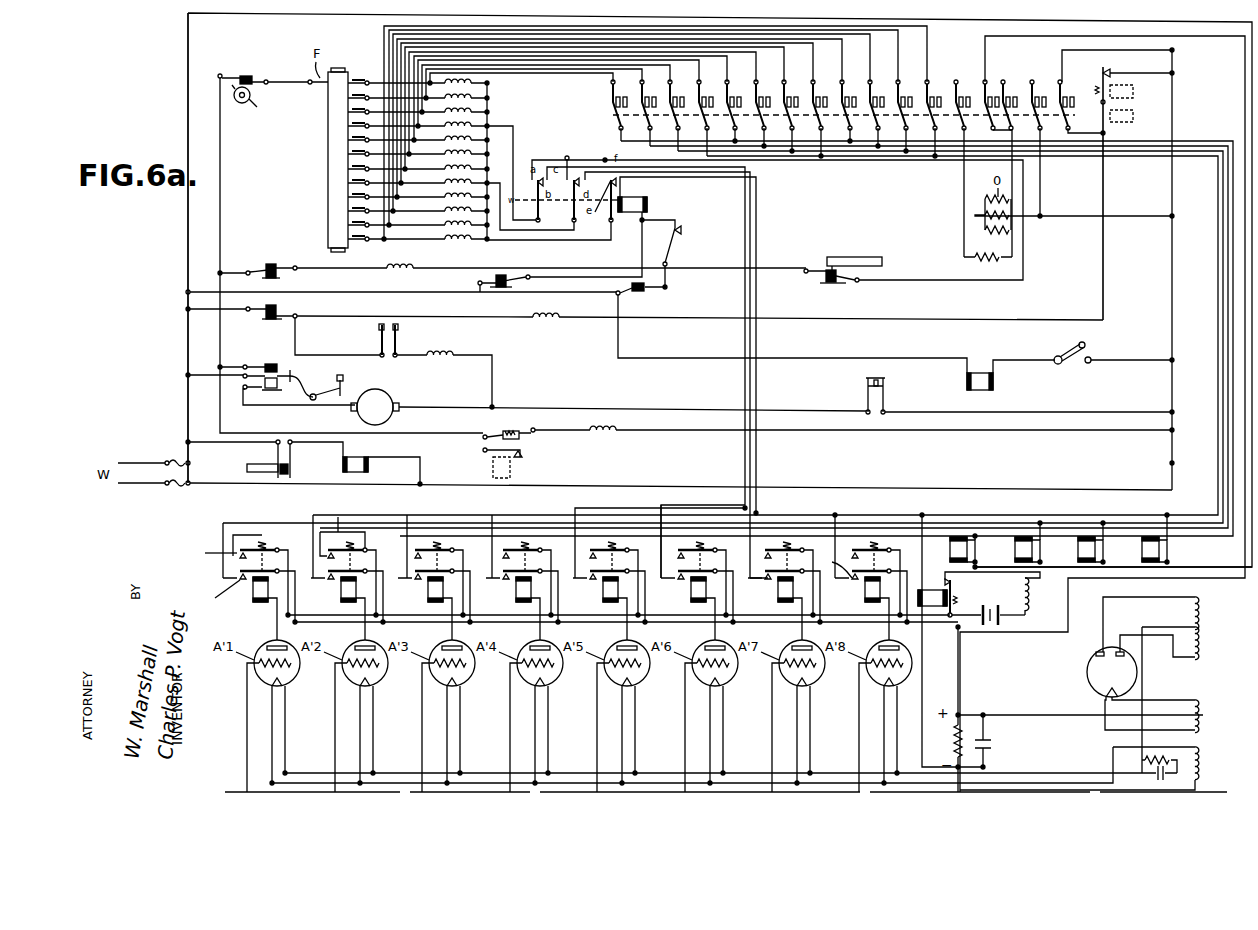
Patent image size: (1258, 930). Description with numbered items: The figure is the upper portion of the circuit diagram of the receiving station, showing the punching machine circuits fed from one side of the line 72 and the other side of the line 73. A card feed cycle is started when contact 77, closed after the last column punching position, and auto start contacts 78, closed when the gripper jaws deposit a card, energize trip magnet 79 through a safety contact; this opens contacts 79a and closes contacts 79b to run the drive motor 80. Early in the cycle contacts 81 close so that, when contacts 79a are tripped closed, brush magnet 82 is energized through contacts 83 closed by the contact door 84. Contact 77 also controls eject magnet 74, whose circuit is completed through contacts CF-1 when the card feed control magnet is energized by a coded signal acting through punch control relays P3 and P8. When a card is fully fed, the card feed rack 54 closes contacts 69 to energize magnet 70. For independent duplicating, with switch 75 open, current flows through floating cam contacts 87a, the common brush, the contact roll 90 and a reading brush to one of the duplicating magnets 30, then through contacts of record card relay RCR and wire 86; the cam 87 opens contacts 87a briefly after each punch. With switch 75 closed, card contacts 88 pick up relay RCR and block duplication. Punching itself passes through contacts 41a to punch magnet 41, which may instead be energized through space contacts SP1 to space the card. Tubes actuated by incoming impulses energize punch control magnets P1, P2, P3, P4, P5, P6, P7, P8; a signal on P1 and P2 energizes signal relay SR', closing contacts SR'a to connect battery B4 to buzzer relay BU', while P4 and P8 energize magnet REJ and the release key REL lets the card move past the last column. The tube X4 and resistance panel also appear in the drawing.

The duplicating magnets 30 is at (428, 156).
The punch magnet 41 is at (611, 439).
The contacts 41a is at (522, 433).
The card feed rack 54 is at (248, 467).
The contacts 69 is at (292, 462).
The magnet 70 is at (367, 467).
The line 72 is at (1250, 116).
The line 73 is at (1172, 463).
The eject magnet 74 is at (556, 322).
The switch 75 is at (1083, 366).
The contact 77 is at (294, 310).
The auto start contacts 78 is at (398, 334).
The trip magnet 79 is at (454, 352).
The contacts 79a is at (285, 368).
The contacts 79b is at (265, 405).
The drive motor 80 is at (393, 400).
The contacts 81 is at (290, 270).
The brush magnet 82 is at (411, 272).
The contacts 83 is at (823, 281).
The contact door 84 is at (850, 258).
The wire 86 is at (835, 161).
The cam 87 is at (253, 103).
The floating cam contacts 87a is at (245, 76).
The card contacts 88 is at (502, 276).
The contact roll 90 is at (326, 140).
The punch control magnet P1 is at (252, 596).
The punch control magnet P2 is at (340, 596).
The punch control relay P3 is at (427, 596).
The punch control magnet P4 is at (515, 596).
The punch control magnet P5 is at (602, 596).
The punch control magnet P6 is at (690, 596).
The punch control magnet P7 is at (777, 596).
The punch control magnet P8 is at (864, 596).
The record card relay RCR is at (646, 206).
The contacts CF-1 is at (1112, 72).
The space contacts SP1 is at (522, 458).
The release key REL is at (1032, 551).
The magnet REJ is at (1159, 551).
The signal relay SR' is at (923, 572).
The contacts SR'a is at (992, 594).
The battery B4 is at (995, 628).
The buzzer relay BU' is at (1044, 596).
The tube X4 is at (1138, 683).